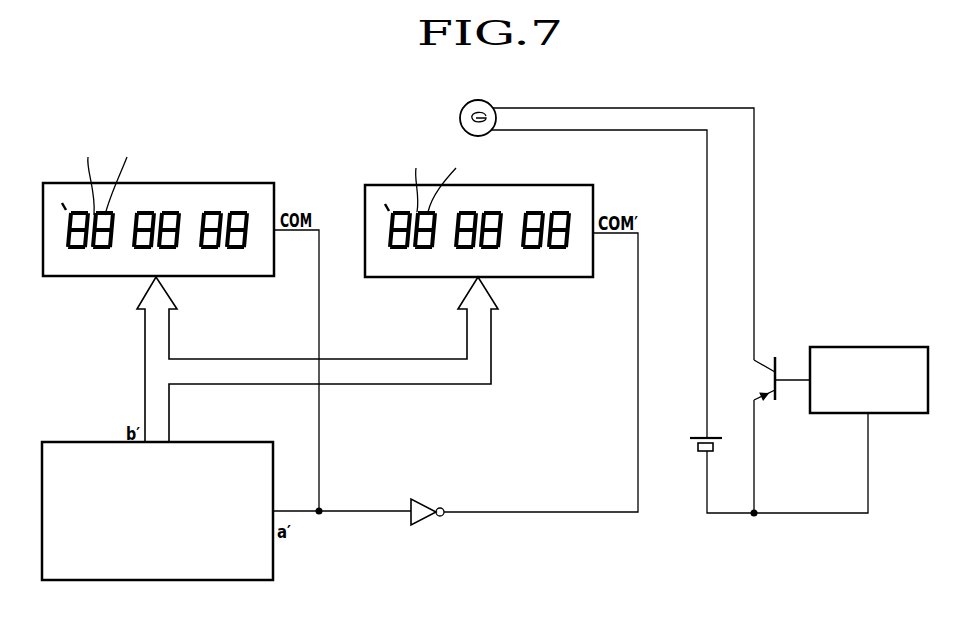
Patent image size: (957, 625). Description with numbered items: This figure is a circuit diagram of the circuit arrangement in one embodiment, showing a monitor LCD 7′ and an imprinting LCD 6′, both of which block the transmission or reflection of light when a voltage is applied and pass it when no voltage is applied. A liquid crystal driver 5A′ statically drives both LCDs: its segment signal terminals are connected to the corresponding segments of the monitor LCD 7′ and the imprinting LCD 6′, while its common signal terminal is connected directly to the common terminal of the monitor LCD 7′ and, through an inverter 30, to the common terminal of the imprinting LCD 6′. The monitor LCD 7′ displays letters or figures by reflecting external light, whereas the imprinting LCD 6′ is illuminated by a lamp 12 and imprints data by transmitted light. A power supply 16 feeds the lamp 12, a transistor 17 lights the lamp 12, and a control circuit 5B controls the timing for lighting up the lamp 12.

The monitor LCD 7′ is at (53, 183).
The imprinting LCD 6′ is at (378, 186).
The lamp 12 is at (478, 100).
The liquid crystal driver 5A′ is at (53, 440).
The inverter 30 is at (426, 499).
The transistor 17 is at (769, 355).
The control circuit 5B is at (904, 347).
The power supply 16 is at (697, 447).